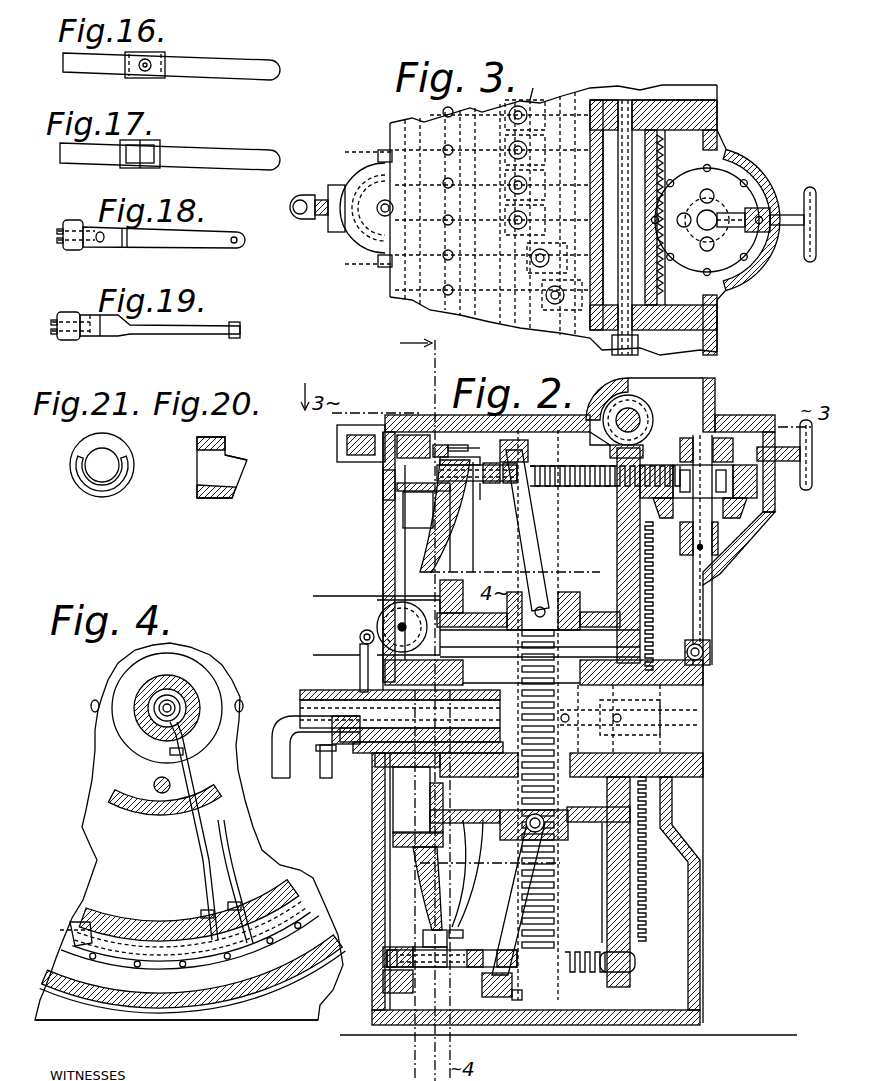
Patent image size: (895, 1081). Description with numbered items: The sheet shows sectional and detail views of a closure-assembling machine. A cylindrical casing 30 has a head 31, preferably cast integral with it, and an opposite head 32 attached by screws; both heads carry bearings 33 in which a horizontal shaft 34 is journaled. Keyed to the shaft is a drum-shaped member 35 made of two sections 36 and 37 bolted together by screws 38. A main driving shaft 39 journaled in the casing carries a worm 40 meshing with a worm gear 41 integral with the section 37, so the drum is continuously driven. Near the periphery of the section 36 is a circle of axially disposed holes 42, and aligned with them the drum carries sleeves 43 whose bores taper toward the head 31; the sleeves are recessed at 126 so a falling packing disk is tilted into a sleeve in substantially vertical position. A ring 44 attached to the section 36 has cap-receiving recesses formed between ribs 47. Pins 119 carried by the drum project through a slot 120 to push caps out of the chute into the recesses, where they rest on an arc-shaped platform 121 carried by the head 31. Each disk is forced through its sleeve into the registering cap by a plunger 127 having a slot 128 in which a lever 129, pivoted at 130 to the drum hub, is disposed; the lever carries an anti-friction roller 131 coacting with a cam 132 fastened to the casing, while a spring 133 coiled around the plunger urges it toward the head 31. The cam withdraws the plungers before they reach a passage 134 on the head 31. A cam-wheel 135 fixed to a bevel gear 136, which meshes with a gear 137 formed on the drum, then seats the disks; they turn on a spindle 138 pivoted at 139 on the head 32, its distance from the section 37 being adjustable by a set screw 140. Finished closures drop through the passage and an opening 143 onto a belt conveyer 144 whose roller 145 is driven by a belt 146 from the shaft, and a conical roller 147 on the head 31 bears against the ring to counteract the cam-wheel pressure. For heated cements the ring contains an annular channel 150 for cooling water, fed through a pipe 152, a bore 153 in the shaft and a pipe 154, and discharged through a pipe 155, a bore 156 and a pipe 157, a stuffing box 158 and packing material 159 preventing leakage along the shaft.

In FIG. 3, the cylindrical casing 30 is at (720, 160).
In FIG. 2, the cylindrical casing 30 is at (752, 546).
In FIG. 4, the cylindrical casing 30 is at (267, 982).
In FIG. 2, the head 31 is at (373, 834).
In FIG. 3, the head 32 is at (714, 323).
In FIG. 2, the head 32 is at (700, 882).
In FIG. 2, the bearings 33 is at (390, 668).
In FIG. 2, the horizontal shaft 34 is at (705, 721).
In FIG. 2, the drum-shaped member 35 is at (462, 549).
In FIG. 4, the drum-shaped member 35 is at (153, 922).
In FIG. 2, the section 36 is at (452, 598).
In FIG. 2, the section 37 is at (617, 574).
In FIG. 2, the screws 38 is at (597, 830).
In FIG. 3, the main driving shaft 39 is at (630, 346).
In FIG. 2, the main driving shaft 39 is at (648, 416).
In FIG. 3, the worm 40 is at (600, 206).
In FIG. 2, the worm 40 is at (648, 436).
In FIG. 2, the worm gear 41 is at (600, 445).
In FIG. 2, the holes 42 is at (490, 485).
In FIG. 21, the sleeves 43 is at (118, 492).
In FIG. 20, the sleeves 43 is at (220, 498).
In FIG. 2, the sleeves 43 is at (418, 510).
In FIG. 2, the ring 44 is at (421, 435).
In FIG. 2, the ribs 47 is at (440, 445).
In FIG. 4, the ribs 47 is at (178, 930).
In FIG. 2, the pin 119 is at (447, 457).
In FIG. 2, the slot 120 is at (460, 451).
In FIG. 2, the arc-shaped platform 121 is at (384, 498).
In FIG. 20, the recess 126 is at (230, 457).
In FIG. 16, the plunger 127 is at (207, 60).
In FIG. 17, the plunger 127 is at (218, 155).
In FIG. 2, the plunger 127 is at (580, 490).
In FIG. 17, the slot 128 is at (148, 148).
In FIG. 2, the slot 128 is at (463, 934).
In FIG. 18, the lever 129 is at (235, 222).
In FIG. 19, the lever 129 is at (145, 334).
In FIG. 2, the lever 129 is at (530, 540).
In FIG. 2, the pivot 130 is at (548, 600).
In FIG. 18, the anti-friction roller 131 is at (80, 221).
In FIG. 19, the anti-friction roller 131 is at (70, 312).
In FIG. 3, the anti-friction roller 131 is at (539, 85).
In FIG. 2, the anti-friction roller 131 is at (528, 447).
In FIG. 3, the cam 132 is at (526, 333).
In FIG. 2, the springs 133 is at (562, 487).
In FIG. 2, the passage 134 is at (408, 546).
In FIG. 3, the cam-wheel 135 is at (730, 178).
In FIG. 2, the cam-wheel 135 is at (750, 480).
In FIG. 3, the bevel gear 136 is at (720, 232).
In FIG. 2, the bevel gear 136 is at (748, 505).
In FIG. 2, the bevel gear 137 is at (652, 548).
In FIG. 3, the spindle 138 is at (752, 274).
In FIG. 2, the spindle 138 is at (713, 612).
In FIG. 2, the pivot 139 is at (703, 653).
In FIG. 3, the set screw 140 is at (805, 212).
In FIG. 2, the set screw 140 is at (800, 425).
In FIG. 2, the opening 143 is at (392, 583).
In FIG. 2, the belt conveyer 144 is at (315, 596).
In FIG. 2, the roller 145 is at (380, 618).
In FIG. 2, the belt 146 is at (360, 641).
In FIG. 3, the conical roller 147 is at (359, 180).
In FIG. 2, the conical roller 147 is at (340, 442).
In FIG. 2, the annular channel 150 is at (396, 487).
In FIG. 4, the annular channel 150 is at (68, 925).
In FIG. 3, the pipe 152 is at (310, 195).
In FIG. 2, the pipe 152 is at (290, 758).
In FIG. 4, the pipe 152 is at (172, 700).
In FIG. 2, the bore 153 is at (590, 715).
In FIG. 2, the pipe 154 is at (473, 870).
In FIG. 4, the pipe 154 is at (200, 890).
In FIG. 2, the pipe 155 is at (455, 851).
In FIG. 4, the pipe 155 is at (190, 816).
In FIG. 2, the bore 156 is at (418, 807).
In FIG. 4, the bore 156 is at (180, 738).
In FIG. 2, the pipe 157 is at (340, 770).
In FIG. 4, the pipe 157 is at (240, 902).
In FIG. 2, the stuffing box 158 is at (350, 690).
In FIG. 2, the packing material 159 is at (386, 760).